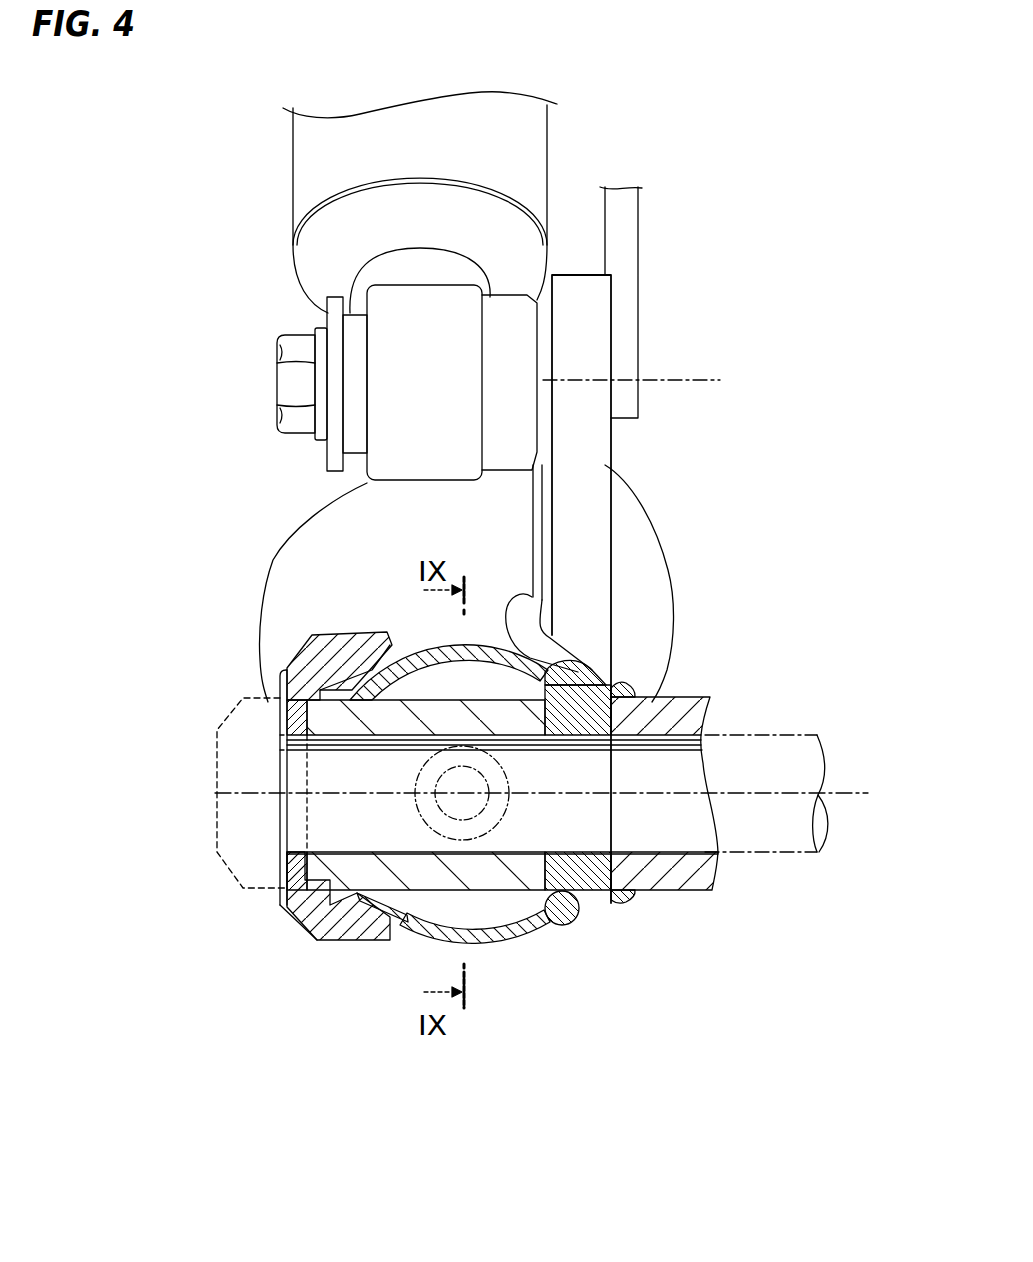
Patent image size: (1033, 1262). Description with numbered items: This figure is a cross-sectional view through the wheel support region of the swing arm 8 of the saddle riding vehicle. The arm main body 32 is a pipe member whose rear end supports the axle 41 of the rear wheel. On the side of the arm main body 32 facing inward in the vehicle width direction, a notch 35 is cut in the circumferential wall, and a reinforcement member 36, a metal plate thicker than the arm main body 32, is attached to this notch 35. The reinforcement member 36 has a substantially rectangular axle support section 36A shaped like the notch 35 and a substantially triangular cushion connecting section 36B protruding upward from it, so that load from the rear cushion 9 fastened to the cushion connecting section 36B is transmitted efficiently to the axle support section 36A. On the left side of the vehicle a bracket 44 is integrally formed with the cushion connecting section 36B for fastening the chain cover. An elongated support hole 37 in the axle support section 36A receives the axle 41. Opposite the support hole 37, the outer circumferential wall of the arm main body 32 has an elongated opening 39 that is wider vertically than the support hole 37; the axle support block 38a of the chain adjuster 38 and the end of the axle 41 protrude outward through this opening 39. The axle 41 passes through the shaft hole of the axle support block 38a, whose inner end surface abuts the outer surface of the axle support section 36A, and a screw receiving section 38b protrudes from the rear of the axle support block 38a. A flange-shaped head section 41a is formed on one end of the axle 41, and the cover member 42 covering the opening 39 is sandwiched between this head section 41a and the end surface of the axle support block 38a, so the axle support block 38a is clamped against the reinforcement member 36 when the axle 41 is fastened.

The rear cushion 9 is at (305, 157).
The bracket 44 is at (638, 228).
The cushion connecting section 36B is at (586, 505).
The reinforcement member 36 is at (598, 683).
The axle support section 36A is at (602, 690).
The arm main body 32 is at (490, 952).
The swing arm 8 is at (518, 950).
The support hole 37 is at (603, 850).
The opening 39 is at (307, 885).
The cover member 42 is at (303, 675).
The axle support block 38a is at (332, 882).
The chain adjuster 38 is at (428, 895).
The notch 35 is at (566, 908).
The head section 41a is at (215, 750).
The screw receiving section 38b is at (422, 820).
The axle 41 is at (776, 854).